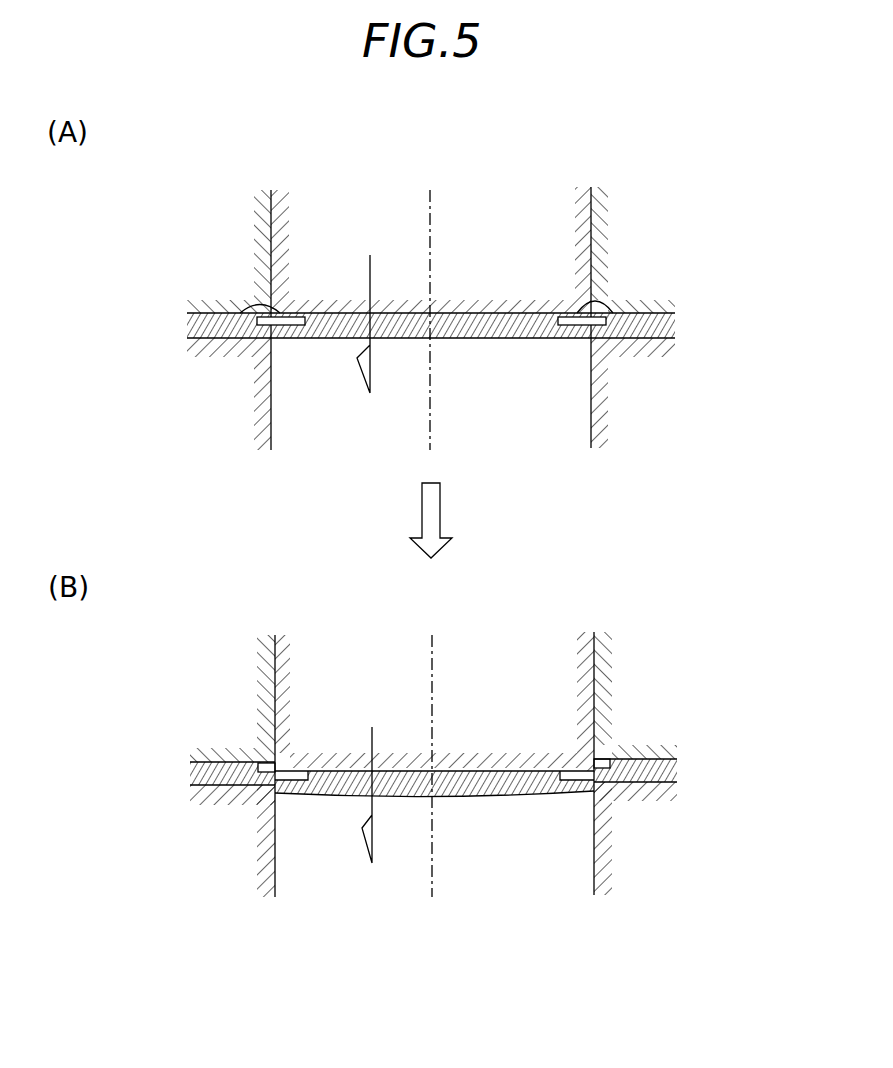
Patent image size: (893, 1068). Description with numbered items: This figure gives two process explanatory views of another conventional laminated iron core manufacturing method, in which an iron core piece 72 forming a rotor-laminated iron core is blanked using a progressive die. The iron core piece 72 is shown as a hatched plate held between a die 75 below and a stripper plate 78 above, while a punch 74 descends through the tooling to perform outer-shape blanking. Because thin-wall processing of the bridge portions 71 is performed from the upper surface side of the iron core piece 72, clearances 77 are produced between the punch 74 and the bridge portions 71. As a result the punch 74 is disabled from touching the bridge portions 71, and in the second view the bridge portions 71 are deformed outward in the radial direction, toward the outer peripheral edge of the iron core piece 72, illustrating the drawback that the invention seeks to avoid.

The bridge portion 71 is at (295, 340).
The iron core piece 72 is at (489, 352).
The punch 74 is at (552, 226).
The die 75 is at (635, 422).
The clearance 77 is at (247, 307).
The stripper plate 78 is at (625, 273).